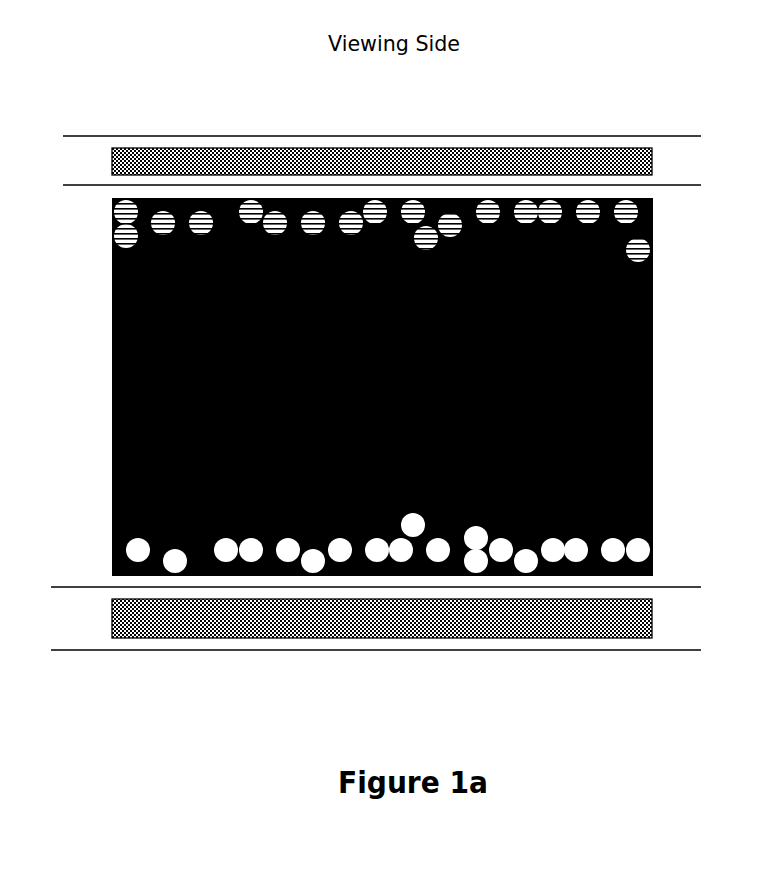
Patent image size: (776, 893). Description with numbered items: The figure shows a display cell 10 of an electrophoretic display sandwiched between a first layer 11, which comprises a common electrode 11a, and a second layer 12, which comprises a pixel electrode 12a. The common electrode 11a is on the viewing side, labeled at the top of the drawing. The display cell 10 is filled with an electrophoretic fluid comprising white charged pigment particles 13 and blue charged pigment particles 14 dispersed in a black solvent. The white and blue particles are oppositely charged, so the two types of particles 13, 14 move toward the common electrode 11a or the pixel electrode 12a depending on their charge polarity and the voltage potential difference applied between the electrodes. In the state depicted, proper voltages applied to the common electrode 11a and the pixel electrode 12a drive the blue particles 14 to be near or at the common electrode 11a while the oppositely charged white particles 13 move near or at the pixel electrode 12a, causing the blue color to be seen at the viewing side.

The display cell 10 is at (646, 380).
The first layer 11 is at (92, 153).
The common electrode 11a is at (155, 153).
The second layer 12 is at (668, 618).
The pixel electrode 12a is at (380, 620).
The white charged pigment particles 13 is at (628, 542).
The blue charged pigment particles 14 is at (543, 199).